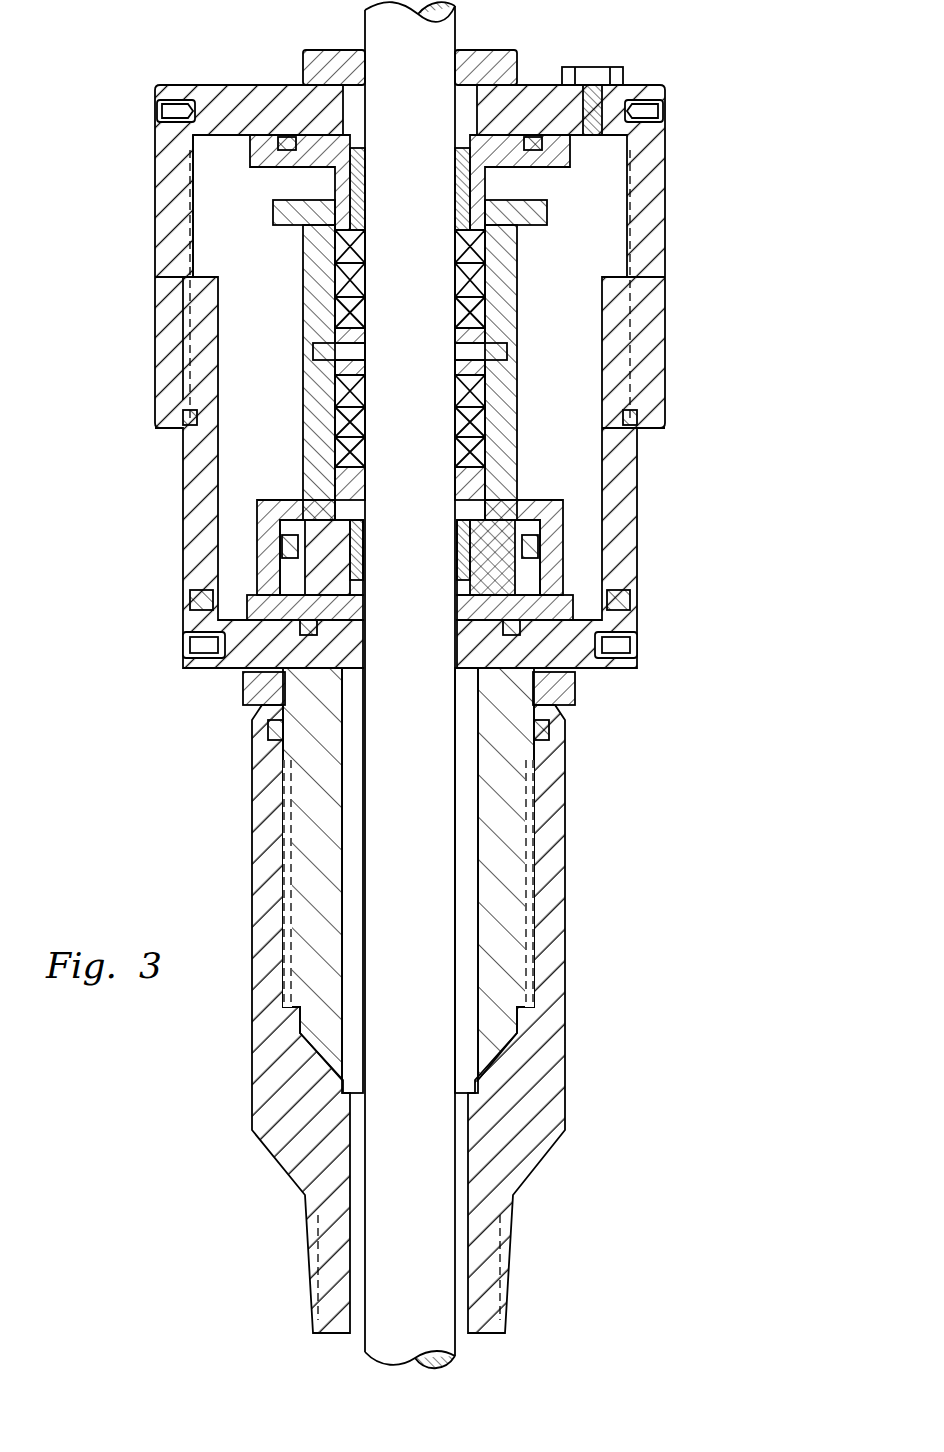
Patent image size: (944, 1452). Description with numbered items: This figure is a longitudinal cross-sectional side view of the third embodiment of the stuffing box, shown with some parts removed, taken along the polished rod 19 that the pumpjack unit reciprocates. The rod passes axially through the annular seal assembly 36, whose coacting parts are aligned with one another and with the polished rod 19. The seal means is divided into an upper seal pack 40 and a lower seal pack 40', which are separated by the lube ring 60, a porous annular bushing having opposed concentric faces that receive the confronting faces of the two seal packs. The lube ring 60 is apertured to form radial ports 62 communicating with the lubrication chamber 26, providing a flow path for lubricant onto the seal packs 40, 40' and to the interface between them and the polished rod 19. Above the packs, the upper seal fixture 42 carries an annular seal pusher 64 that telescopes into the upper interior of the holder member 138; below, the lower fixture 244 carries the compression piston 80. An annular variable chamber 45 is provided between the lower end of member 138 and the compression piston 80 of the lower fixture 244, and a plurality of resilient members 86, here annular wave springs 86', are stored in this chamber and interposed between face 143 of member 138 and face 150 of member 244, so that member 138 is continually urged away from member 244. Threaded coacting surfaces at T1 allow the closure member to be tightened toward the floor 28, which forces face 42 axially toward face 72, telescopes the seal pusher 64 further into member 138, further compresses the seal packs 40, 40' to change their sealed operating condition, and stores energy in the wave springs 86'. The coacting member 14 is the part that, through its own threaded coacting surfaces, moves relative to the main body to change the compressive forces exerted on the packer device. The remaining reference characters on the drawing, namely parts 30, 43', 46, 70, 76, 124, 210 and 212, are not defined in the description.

The coacting member 14 is at (593, 963).
The polished rod 19 is at (429, 858).
The lubrication chamber 26 is at (572, 248).
The floor 28 is at (607, 590).
The bolt 30 is at (610, 145).
The seal assembly 36 is at (237, 360).
The upper seal pack 40 is at (304, 372).
The lower seal pack 40' is at (302, 437).
The upper seal fixture 42 is at (290, 172).
The seal spring 43' is at (465, 557).
The variable chamber 45 is at (287, 508).
The sleeve 46 is at (352, 722).
The lube ring 60 is at (460, 343).
The radial ports 62 is at (517, 354).
The seal pusher 64 is at (490, 193).
The flange 70 is at (276, 226).
The face 72 is at (283, 196).
The spacer sleeve 76 is at (485, 280).
The compression piston 80 is at (283, 580).
The resilient members 86 is at (410, 629).
The annular wave springs 86' is at (410, 548).
The housing outer surface 124 is at (676, 374).
The member 138 is at (294, 302).
The face 143 is at (270, 525).
The face 150 is at (528, 503).
The nut 210 is at (108, 779).
The housing side wall 212 is at (138, 378).
The lower fixture 244 is at (238, 604).
The threaded coacting surfaces T1 is at (633, 313).